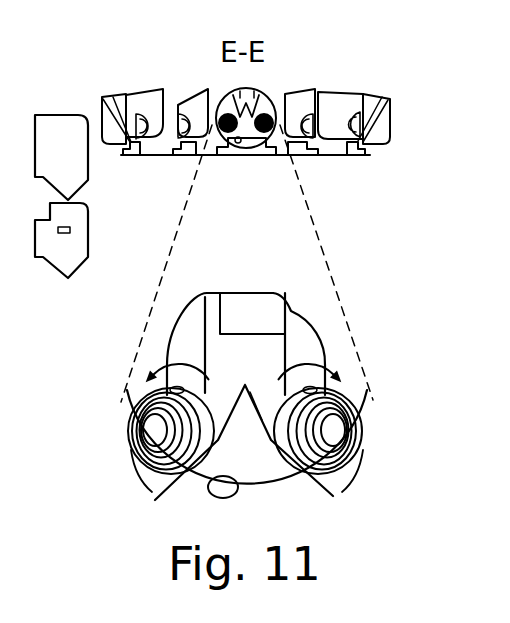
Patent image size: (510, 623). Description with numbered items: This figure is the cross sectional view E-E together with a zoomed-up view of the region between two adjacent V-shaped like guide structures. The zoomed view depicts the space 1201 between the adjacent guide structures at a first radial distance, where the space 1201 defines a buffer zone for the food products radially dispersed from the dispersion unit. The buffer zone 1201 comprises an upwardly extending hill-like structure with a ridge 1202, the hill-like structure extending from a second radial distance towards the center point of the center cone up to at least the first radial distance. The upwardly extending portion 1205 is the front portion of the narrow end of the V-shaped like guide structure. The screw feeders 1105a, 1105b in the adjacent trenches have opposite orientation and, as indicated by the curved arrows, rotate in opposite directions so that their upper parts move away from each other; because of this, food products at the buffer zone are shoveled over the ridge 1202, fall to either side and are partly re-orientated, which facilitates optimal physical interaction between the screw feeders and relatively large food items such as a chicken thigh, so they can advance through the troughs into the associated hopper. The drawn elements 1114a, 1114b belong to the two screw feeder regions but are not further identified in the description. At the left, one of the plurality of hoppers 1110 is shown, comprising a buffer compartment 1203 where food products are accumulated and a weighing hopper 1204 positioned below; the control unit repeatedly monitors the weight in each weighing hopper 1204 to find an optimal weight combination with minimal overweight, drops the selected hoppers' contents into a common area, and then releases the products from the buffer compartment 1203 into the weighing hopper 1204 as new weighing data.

The plurality of hoppers 1110 is at (52, 92).
The buffer compartment 1203 is at (77, 153).
The weighing hopper 1204 is at (55, 252).
The space 1201 is at (348, 331).
The ridge 1202 is at (230, 387).
The upwardly extending portion 1205 is at (252, 313).
The first spring coil 1114a is at (140, 403).
The second spring coil 1114b is at (357, 412).
The screw feeder 1105a is at (150, 490).
The screw feeder 1105b is at (340, 497).